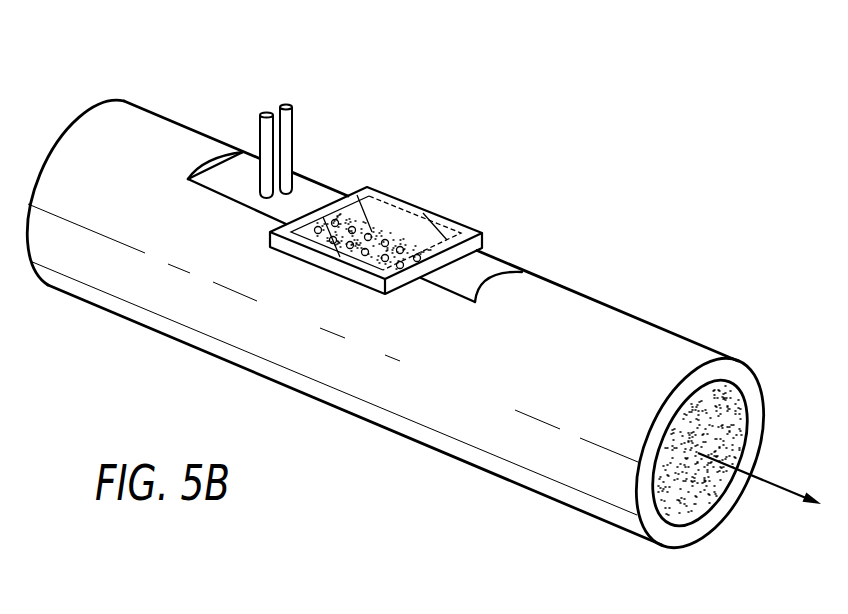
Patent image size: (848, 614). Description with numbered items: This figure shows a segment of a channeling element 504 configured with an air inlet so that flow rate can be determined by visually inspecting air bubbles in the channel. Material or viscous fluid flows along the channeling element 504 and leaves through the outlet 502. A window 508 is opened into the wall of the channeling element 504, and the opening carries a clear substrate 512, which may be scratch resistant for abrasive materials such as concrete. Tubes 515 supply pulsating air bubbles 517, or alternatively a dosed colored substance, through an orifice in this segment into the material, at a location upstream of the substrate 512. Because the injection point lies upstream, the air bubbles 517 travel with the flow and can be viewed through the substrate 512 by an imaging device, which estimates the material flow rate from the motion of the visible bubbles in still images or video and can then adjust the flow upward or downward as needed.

The outlet 502 is at (759, 491).
The channeling element 504 is at (153, 305).
The window 508 is at (490, 270).
The clear substrate 512 is at (462, 237).
The tubes 515 is at (267, 111).
The air bubbles 517 is at (368, 236).